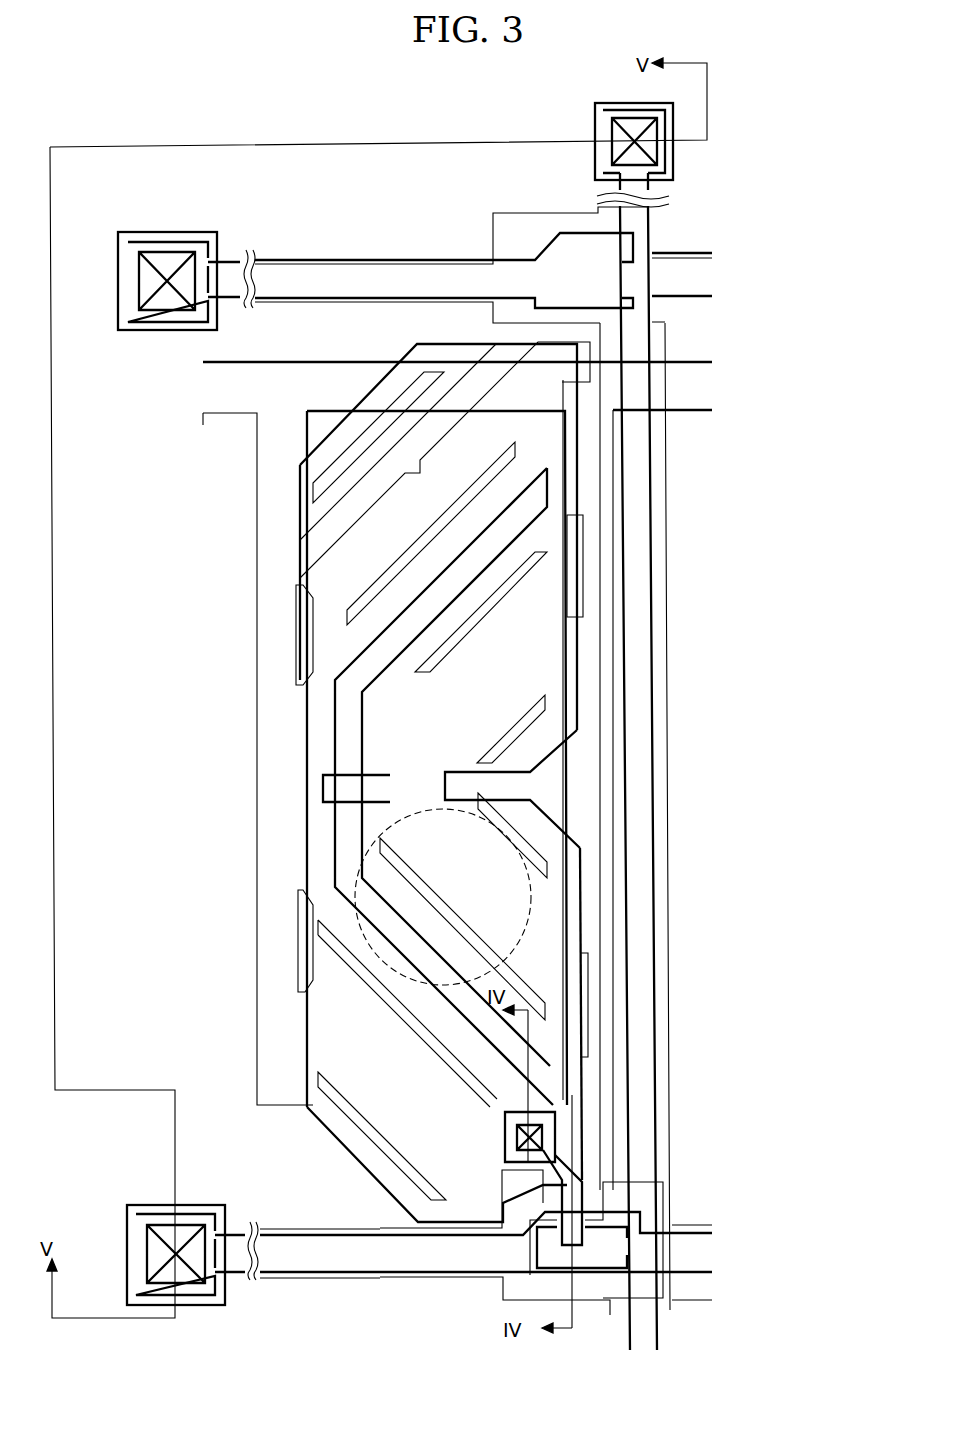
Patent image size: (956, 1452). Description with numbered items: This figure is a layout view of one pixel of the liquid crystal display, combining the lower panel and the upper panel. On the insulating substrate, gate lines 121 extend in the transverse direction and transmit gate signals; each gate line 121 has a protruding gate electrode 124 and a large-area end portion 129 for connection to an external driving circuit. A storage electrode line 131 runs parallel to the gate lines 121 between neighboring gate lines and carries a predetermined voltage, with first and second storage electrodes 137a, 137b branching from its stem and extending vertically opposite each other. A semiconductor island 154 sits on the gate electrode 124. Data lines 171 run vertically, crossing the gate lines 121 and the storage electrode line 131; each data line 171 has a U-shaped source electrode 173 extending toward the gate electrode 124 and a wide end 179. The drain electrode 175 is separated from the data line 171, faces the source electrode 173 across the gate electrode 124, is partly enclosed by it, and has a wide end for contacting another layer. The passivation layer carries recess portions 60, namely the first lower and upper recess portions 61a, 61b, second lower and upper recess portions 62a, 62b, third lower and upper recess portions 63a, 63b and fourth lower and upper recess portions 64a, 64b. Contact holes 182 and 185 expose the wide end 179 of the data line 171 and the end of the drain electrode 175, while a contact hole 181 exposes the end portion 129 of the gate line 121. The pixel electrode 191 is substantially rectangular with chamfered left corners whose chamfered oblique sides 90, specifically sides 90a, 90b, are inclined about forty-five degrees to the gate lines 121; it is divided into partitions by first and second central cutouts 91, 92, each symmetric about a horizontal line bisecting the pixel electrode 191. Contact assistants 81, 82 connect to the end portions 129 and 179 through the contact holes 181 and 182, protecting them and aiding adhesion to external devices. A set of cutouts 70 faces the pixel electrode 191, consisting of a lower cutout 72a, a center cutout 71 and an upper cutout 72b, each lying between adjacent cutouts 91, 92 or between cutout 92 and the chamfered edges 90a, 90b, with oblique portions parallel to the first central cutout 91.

The gate line 121 is at (340, 298).
The gate electrode 124 is at (500, 1293).
The end portion 129 is at (191, 242).
The storage electrode line 131 is at (243, 364).
The first storage electrode 137a is at (257, 510).
The second storage electrode 137b is at (617, 523).
The semiconductor island 154 is at (665, 1195).
The data line 171 is at (610, 592).
The source electrode 173 is at (593, 1270).
The drain electrode 175 is at (572, 1165).
The wide end 179 is at (673, 160).
The contact hole 181 is at (150, 252).
The contact hole 182 is at (622, 118).
The contact hole 185 is at (545, 1135).
The pixel electrode 191 is at (466, 769).
The contact assistant 81 is at (145, 332).
The contact assistant 82 is at (595, 125).
The recess portion 60 is at (576, 767).
The first lower recess portion 61a is at (480, 930).
The first upper recess portion 61b is at (510, 603).
The second lower recess portion 62a is at (523, 1068).
The second upper recess portion 62b is at (523, 452).
The third lower recess portion 63a is at (390, 1195).
The third upper recess portion 63b is at (400, 393).
The fourth lower recess portion 64a is at (565, 862).
The fourth upper recess portion 64b is at (540, 718).
The set of cutouts 70 is at (523, 759).
The center cutout 71 is at (520, 683).
The lower cutout 72a is at (305, 1022).
The upper cutout 72b is at (298, 535).
The chamfered oblique sides 90 is at (817, 612).
The chamfered oblique side 90a is at (348, 1157).
The chamfered oblique side 90b is at (355, 395).
The first central cutout 91 is at (323, 775).
The second central cutout 92 is at (560, 832).